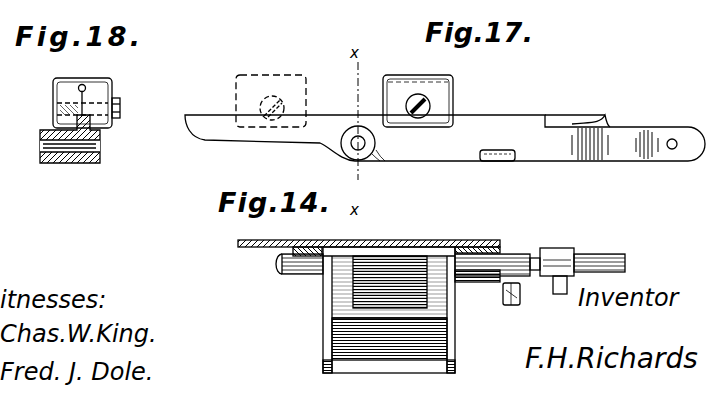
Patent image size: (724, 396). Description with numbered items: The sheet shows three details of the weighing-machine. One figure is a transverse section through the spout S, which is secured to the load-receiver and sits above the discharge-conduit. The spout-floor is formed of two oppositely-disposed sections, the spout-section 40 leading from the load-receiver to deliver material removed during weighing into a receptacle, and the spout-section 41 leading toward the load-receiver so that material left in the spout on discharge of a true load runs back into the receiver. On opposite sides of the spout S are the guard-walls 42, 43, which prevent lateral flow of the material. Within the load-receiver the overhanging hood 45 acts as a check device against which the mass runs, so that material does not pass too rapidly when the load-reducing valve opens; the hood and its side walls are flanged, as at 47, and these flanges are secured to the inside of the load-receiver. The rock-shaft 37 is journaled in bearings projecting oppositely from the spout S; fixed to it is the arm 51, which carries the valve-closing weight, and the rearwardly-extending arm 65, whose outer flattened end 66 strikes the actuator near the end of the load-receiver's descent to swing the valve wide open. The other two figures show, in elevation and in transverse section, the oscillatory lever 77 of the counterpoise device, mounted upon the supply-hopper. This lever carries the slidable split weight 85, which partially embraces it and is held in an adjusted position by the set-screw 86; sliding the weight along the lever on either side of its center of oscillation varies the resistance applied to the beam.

In FIG. 18, the slidable split weight 85 is at (58, 87).
In FIG. 17, the slidable split weight 85 is at (445, 90).
In FIG. 18, the set-screw 86 is at (121, 106).
In FIG. 17, the set-screw 86 is at (425, 108).
In FIG. 18, the oscillatory lever 77 is at (78, 163).
In FIG. 17, the oscillatory lever 77 is at (522, 125).
In FIG. 14, the flange 47 is at (352, 240).
In FIG. 14, the spout S is at (375, 310).
In FIG. 14, the spout-section 41 is at (343, 312).
In FIG. 14, the overhanging hood 45 is at (383, 300).
In FIG. 14, the spout-section 40 is at (430, 350).
In FIG. 14, the guard-wall 43 is at (325, 310).
In FIG. 14, the guard-wall 42 is at (456, 320).
In FIG. 14, the arm 51 is at (572, 250).
In FIG. 14, the rock-shaft 37 is at (626, 262).
In FIG. 14, the rearwardly-extending arm 65 is at (503, 292).
In FIG. 14, the flattened end 66 is at (511, 306).